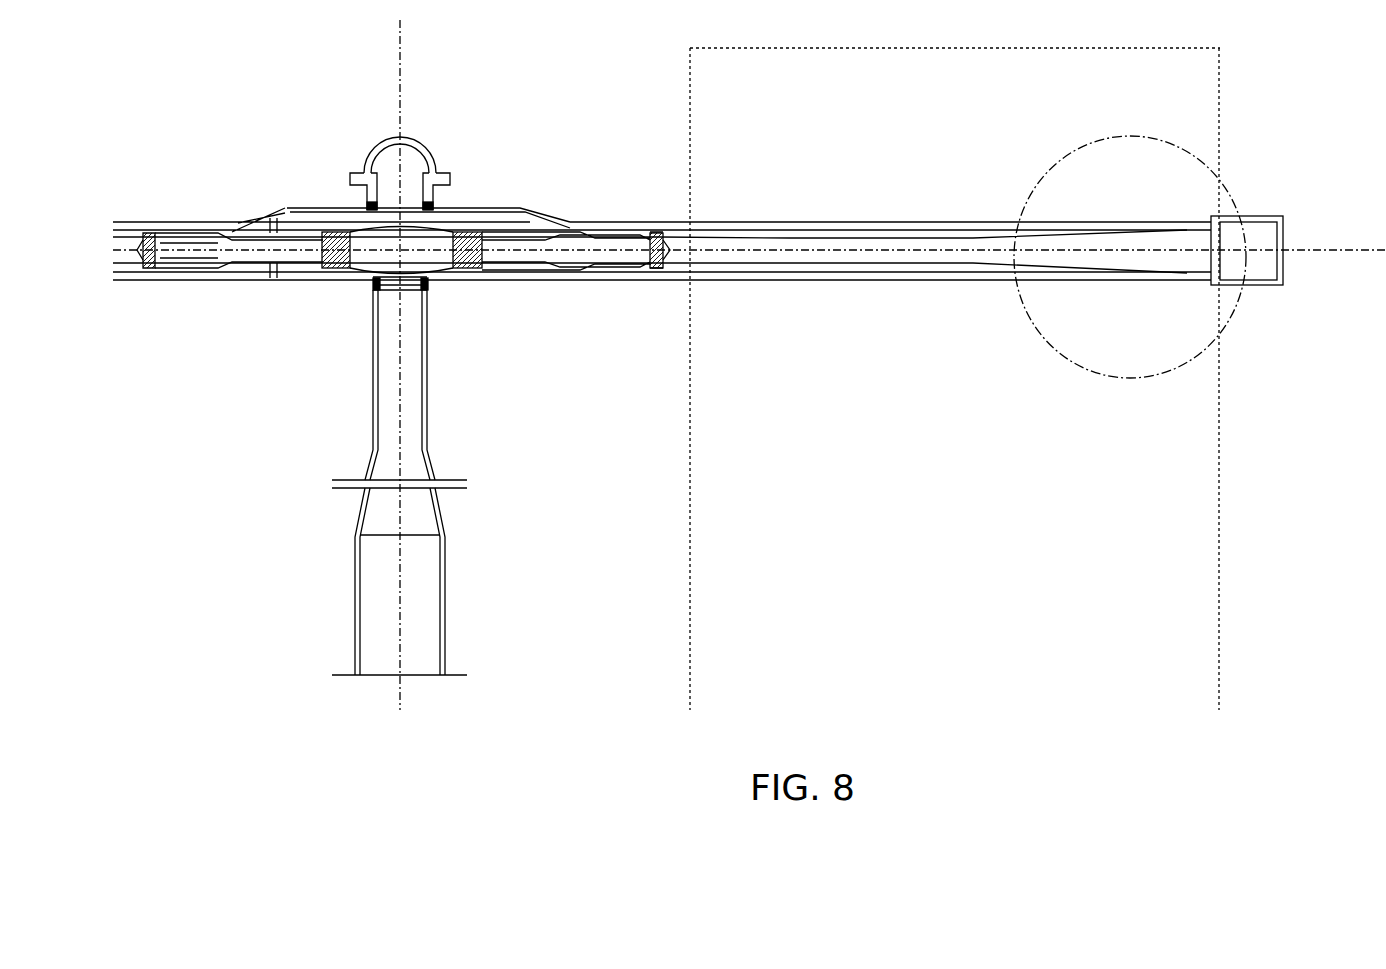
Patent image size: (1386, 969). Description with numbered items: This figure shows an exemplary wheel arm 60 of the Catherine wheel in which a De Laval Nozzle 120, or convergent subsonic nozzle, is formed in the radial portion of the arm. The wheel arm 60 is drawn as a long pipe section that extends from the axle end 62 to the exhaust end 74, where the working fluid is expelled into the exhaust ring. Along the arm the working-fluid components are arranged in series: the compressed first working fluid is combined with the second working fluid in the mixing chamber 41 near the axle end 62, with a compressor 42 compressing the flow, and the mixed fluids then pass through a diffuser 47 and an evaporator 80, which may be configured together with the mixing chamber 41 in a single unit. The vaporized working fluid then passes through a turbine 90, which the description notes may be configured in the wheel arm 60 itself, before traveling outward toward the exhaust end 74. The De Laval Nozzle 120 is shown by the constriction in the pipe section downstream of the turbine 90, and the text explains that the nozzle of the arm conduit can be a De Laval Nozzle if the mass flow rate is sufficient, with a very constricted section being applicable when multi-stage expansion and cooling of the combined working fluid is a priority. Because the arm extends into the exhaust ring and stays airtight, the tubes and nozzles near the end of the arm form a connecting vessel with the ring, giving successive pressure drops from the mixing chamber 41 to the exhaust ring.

The mixing chamber 41 is at (538, 235).
The compressor 42 is at (473, 270).
The diffuser 47 is at (597, 260).
The wheel arm 60 is at (843, 263).
The axle end 62 is at (440, 268).
The exhaust end 74 is at (1273, 282).
The evaporator 80 is at (643, 243).
The turbine 90 is at (660, 260).
The De Laval Nozzle 120 is at (932, 255).